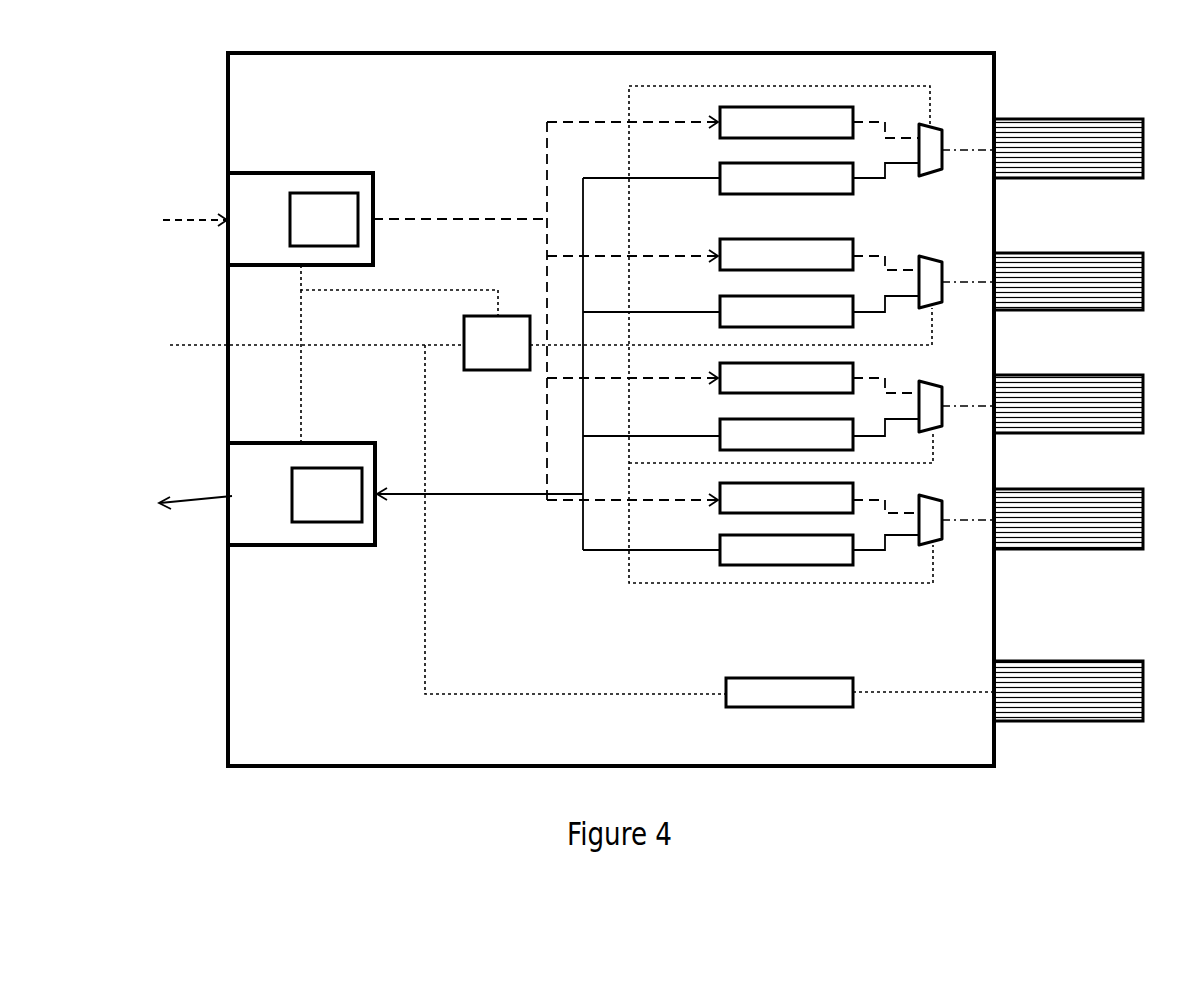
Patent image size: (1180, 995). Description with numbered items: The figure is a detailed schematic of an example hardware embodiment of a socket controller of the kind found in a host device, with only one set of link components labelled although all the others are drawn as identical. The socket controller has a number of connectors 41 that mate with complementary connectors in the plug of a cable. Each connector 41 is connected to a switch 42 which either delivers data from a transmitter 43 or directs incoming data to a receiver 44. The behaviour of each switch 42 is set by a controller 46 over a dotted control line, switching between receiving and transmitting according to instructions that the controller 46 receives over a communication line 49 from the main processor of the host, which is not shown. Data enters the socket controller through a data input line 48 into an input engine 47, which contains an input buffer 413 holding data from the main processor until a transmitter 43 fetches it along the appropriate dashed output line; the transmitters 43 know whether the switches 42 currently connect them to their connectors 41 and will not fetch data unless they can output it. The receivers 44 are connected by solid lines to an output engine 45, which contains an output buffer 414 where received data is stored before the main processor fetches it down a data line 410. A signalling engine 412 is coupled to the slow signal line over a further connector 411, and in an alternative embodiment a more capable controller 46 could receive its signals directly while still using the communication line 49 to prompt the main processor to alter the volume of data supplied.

The connector 41 is at (1072, 310).
The switch 42 is at (935, 257).
The transmitter 43 is at (845, 238).
The receiver 44 is at (845, 327).
The output engine 45 is at (302, 545).
The controller 46 is at (464, 359).
The input engine 47 is at (298, 172).
The data input line 48 is at (159, 229).
The communication line 49 is at (518, 337).
The data line 410 is at (163, 503).
The connector 411 is at (1071, 721).
The signalling engine 412 is at (800, 677).
The input buffer 413 is at (290, 218).
The output buffer 414 is at (292, 495).